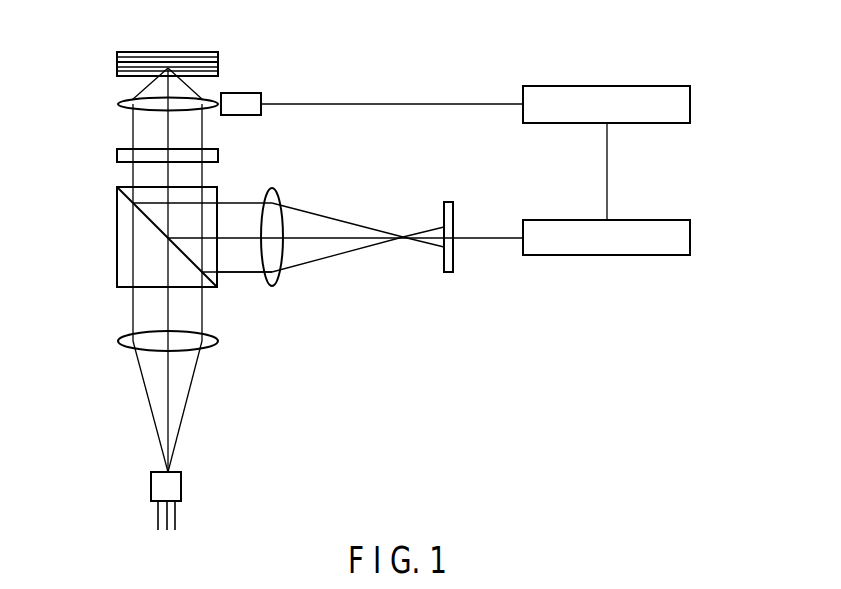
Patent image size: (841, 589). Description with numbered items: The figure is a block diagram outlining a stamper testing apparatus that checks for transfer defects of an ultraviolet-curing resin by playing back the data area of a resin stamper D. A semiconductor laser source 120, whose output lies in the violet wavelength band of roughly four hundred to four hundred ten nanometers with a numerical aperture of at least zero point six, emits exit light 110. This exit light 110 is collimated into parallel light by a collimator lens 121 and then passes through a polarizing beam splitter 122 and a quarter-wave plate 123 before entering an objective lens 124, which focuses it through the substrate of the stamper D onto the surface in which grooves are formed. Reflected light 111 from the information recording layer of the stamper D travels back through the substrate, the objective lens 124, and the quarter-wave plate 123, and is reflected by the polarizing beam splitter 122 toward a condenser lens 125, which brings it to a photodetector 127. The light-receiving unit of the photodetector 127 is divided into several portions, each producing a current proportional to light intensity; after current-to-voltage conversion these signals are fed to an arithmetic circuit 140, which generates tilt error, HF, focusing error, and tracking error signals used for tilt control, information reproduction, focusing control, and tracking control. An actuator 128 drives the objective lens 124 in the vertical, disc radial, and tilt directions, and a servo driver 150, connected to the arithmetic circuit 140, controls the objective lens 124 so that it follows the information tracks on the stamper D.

The stamper D is at (186, 52).
The exit light 110 is at (151, 415).
The reflected light 111 is at (245, 272).
The semiconductor laser source 120 is at (151, 487).
The collimator lens 121 is at (118, 342).
The polarizing beam splitter 122 is at (117, 232).
The λ/4 plate 123 is at (117, 156).
The objective lens 124 is at (117, 104).
The condenser lens 125 is at (272, 188).
The photodetector 127 is at (448, 202).
The actuator 128 is at (245, 93).
The arithmetic circuit 140 is at (690, 236).
The servo driver 150 is at (690, 103).